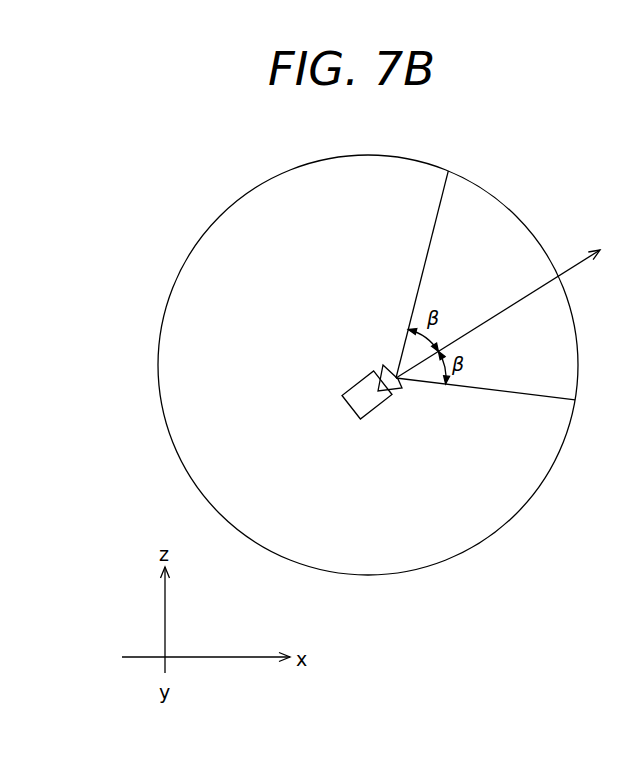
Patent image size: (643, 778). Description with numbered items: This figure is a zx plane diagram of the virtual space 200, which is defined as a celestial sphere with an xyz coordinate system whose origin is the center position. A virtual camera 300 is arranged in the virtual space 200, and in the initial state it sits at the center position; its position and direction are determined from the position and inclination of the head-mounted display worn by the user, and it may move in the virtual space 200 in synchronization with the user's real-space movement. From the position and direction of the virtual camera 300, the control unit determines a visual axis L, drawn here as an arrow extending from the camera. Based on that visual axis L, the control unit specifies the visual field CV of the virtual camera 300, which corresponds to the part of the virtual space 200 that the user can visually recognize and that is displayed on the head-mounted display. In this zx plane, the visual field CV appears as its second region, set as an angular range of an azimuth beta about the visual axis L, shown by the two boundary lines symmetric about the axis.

The virtual space 200 is at (294, 168).
The virtual camera 300 is at (375, 413).
The visual field CV is at (488, 205).
The visual axis L is at (568, 258).